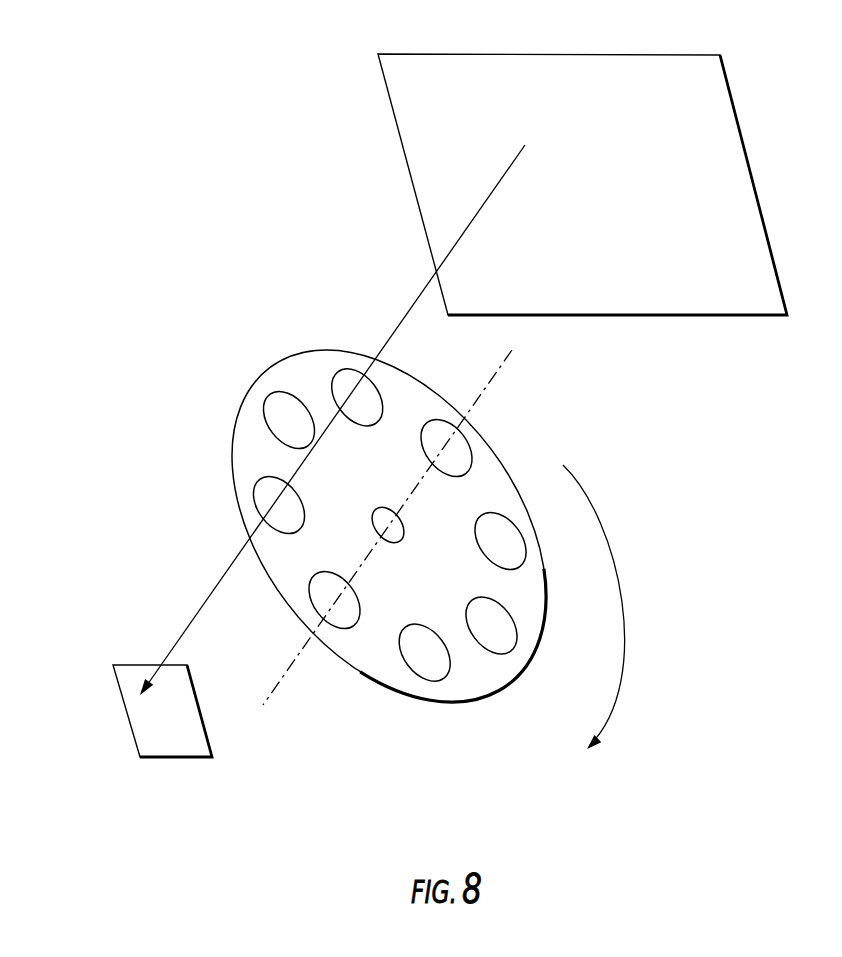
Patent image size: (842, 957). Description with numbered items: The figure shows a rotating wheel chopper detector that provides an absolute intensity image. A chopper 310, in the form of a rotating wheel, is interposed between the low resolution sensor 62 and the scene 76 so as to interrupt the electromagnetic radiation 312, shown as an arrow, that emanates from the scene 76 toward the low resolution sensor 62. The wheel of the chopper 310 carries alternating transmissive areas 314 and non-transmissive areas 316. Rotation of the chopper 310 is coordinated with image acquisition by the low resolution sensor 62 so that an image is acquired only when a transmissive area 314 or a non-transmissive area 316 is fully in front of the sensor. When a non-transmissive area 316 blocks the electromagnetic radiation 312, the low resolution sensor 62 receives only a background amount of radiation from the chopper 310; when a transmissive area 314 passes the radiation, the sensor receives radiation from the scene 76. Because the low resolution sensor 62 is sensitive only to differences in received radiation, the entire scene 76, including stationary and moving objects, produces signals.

The scene 76 is at (366, 55).
The low resolution sensor 62 is at (103, 665).
The chopper 310 is at (392, 526).
The electromagnetic radiation 312 is at (208, 576).
The transmissive area 314 is at (458, 443).
The non-transmissive area 316 is at (428, 405).